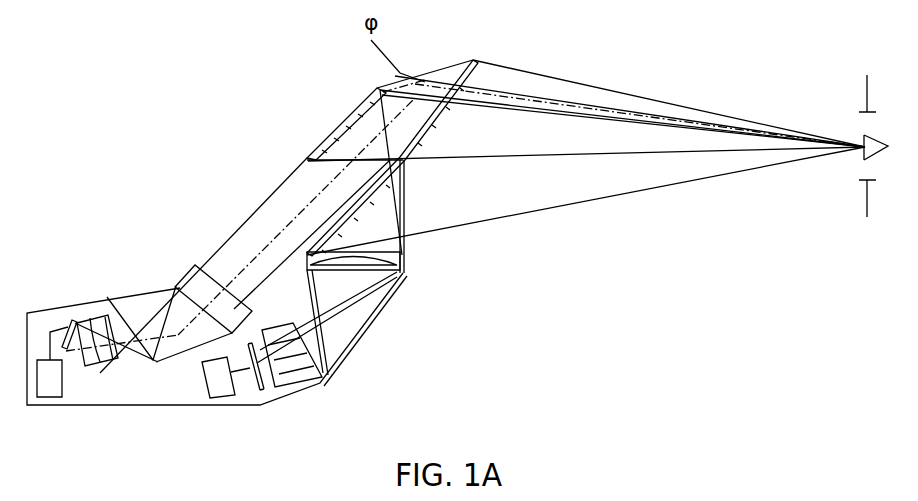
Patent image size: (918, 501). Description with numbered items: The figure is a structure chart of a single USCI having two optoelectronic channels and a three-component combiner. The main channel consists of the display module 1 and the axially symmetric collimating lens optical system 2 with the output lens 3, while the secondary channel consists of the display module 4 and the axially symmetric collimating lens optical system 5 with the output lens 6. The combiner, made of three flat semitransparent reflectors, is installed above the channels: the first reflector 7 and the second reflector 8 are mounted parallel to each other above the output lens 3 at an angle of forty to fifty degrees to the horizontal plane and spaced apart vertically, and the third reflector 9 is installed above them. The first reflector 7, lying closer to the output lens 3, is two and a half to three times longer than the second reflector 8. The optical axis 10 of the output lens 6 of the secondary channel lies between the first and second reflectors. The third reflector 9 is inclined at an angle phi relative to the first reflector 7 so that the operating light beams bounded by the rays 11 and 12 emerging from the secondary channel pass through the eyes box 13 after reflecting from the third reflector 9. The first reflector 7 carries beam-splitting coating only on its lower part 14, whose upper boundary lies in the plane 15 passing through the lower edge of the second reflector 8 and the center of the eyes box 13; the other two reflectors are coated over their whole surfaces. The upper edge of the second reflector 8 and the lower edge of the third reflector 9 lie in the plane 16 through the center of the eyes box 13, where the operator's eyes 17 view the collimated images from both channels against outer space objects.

The display module 1 is at (258, 382).
The ax symmetric collimating lens optical system 2 is at (360, 328).
The output lens 3 is at (405, 245).
The display module 4 is at (68, 348).
The ax symmetric collimating lens optical system 5 is at (137, 350).
The output lens 6 is at (197, 287).
The first reflector 7 is at (440, 123).
The second reflector 8 is at (350, 110).
The third reflector 9 is at (460, 68).
The optical axis 10 is at (240, 275).
The ray 11 is at (270, 247).
The ray 12 is at (290, 183).
The eyes box 13 is at (867, 92).
The lower part 14 is at (372, 190).
The plane 15 is at (500, 155).
The plane 16 is at (597, 118).
The eyes 17 is at (863, 152).